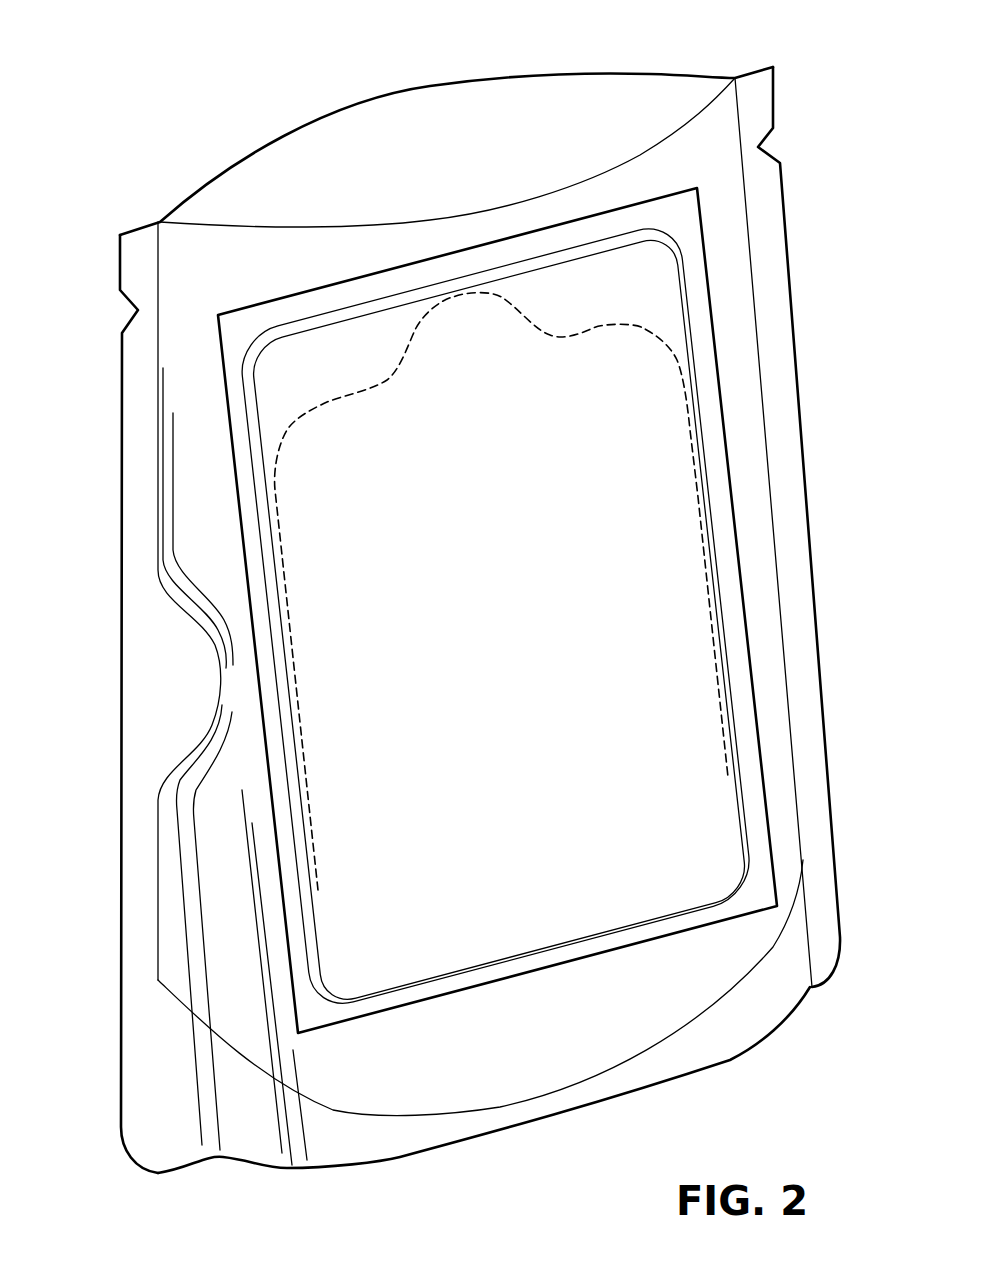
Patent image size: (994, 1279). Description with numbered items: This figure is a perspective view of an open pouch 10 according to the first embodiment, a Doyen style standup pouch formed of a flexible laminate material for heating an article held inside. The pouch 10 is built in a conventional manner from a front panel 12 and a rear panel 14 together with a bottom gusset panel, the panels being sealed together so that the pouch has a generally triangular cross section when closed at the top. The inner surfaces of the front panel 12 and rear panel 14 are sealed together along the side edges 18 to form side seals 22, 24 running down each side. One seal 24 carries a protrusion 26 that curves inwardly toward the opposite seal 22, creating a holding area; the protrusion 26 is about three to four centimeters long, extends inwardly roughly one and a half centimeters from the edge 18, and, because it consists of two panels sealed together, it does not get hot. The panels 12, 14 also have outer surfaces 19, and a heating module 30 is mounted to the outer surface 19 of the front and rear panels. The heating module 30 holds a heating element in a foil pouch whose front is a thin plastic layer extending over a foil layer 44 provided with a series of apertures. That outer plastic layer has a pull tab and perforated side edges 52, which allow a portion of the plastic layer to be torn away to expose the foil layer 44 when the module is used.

The pouch 10 is at (862, 697).
The front panel 12 is at (775, 1020).
The rear panel 14 is at (660, 93).
The side edges 18 is at (120, 395).
The outer surfaces 19 is at (722, 225).
The side seal 22 is at (788, 498).
The side seal 24 is at (142, 558).
The protrusion 26 is at (160, 687).
The heating module 30 is at (527, 677).
The foil layer 44 is at (668, 450).
The perforated side edges 52 is at (728, 756).